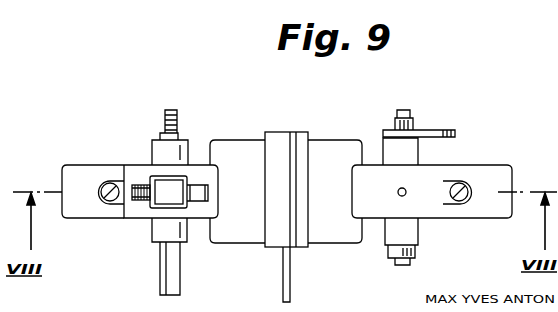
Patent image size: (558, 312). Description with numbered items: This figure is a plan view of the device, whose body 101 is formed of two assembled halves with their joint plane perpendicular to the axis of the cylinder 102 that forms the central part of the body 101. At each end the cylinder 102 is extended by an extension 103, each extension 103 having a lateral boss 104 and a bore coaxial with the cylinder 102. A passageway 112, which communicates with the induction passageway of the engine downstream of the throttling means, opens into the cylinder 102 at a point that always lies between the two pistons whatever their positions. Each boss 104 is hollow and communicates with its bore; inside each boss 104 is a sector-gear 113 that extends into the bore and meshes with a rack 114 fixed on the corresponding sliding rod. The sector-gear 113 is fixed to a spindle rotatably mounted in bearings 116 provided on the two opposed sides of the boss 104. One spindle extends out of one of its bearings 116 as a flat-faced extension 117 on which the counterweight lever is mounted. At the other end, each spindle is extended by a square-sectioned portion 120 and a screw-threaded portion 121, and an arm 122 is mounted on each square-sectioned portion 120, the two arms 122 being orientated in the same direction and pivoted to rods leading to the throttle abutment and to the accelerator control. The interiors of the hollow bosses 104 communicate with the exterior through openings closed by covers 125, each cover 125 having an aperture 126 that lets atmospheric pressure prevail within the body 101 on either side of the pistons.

The body 101 is at (302, 127).
The cylinder 102 is at (252, 235).
The extension 103 is at (67, 163).
The lateral boss 104 is at (193, 170).
The passageway 112 is at (291, 282).
The sector-gear 113 is at (172, 197).
The rack 114 is at (133, 188).
The bearings 116 is at (160, 148).
The flat-faced extension 117 is at (172, 280).
The square-sectioned portion 120 is at (180, 131).
The screw-threaded portion 121 is at (172, 108).
The arm 122 is at (435, 133).
The cover 125 is at (426, 210).
The aperture 126 is at (400, 188).